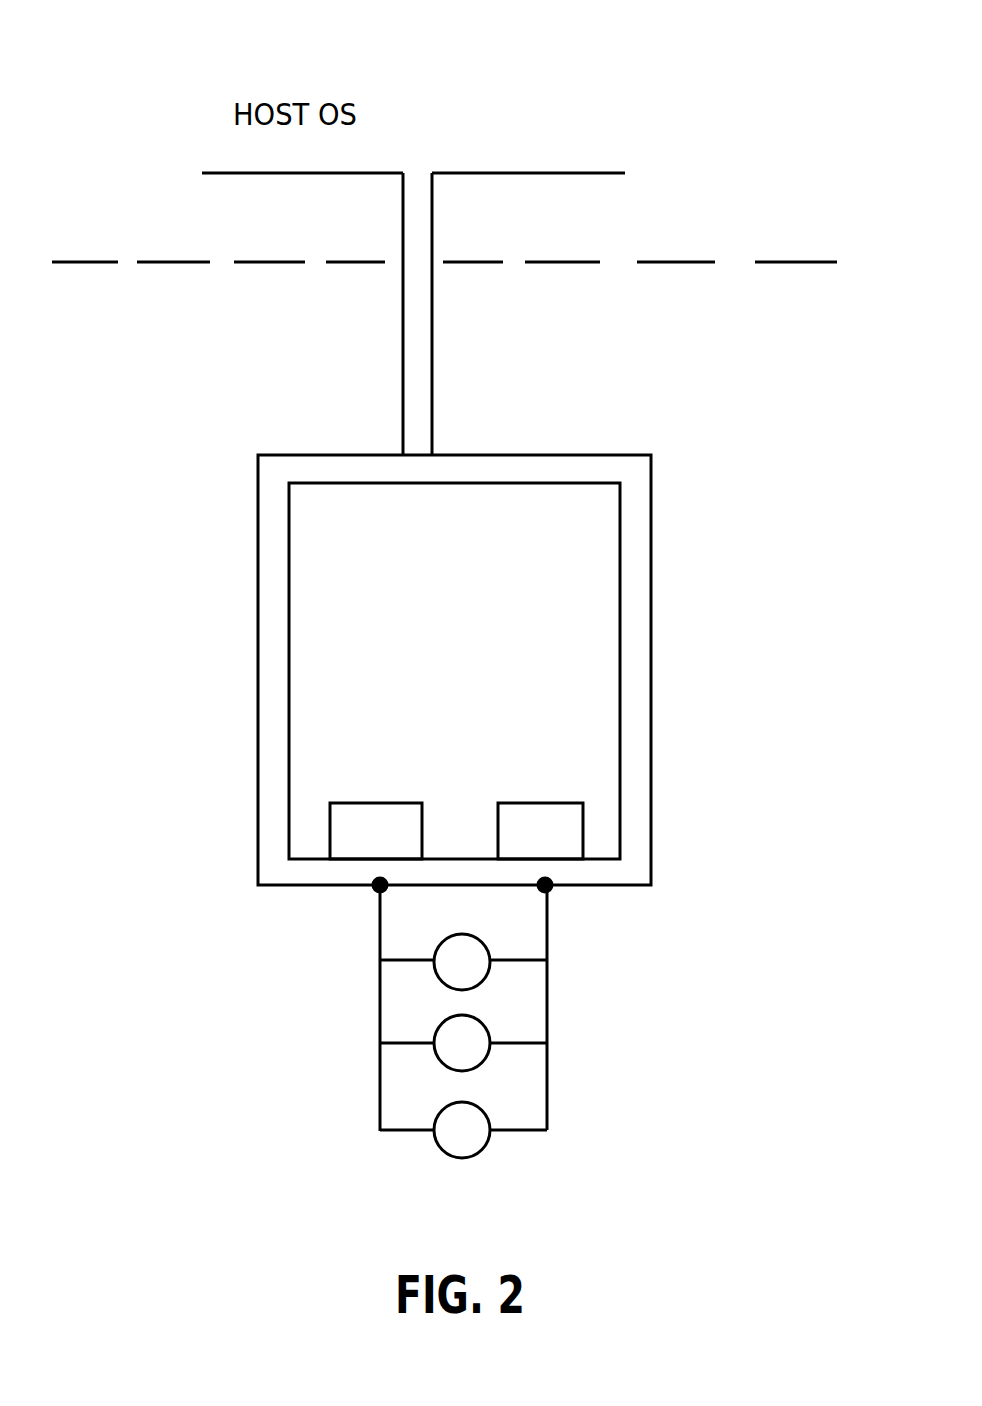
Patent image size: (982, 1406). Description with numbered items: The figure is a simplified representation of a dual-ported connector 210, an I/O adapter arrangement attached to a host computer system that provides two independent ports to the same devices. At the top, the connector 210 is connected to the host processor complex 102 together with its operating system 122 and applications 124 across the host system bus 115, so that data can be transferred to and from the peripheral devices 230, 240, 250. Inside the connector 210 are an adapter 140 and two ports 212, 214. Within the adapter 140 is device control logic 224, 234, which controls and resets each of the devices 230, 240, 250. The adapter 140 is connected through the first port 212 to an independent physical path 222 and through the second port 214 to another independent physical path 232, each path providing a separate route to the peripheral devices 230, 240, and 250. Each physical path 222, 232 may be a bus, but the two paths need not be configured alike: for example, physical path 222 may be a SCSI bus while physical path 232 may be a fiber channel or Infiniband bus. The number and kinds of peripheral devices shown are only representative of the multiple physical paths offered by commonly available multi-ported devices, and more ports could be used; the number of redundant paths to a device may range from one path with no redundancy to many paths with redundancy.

The host processor complex 102 is at (178, 26).
The operating system 122 is at (387, 131).
The applications 124 is at (534, 131).
The host system bus 115 is at (432, 219).
The dual-ported connector 210 is at (651, 515).
The adapter 140 is at (620, 639).
The device control logic 224 is at (382, 802).
The device control logic 234 is at (543, 802).
The port 212 is at (376, 890).
The port 214 is at (549, 890).
The physical path 222 is at (379, 932).
The physical path 232 is at (548, 928).
The peripheral device 230 is at (603, 962).
The peripheral device 240 is at (603, 1028).
The peripheral device 250 is at (603, 1097).